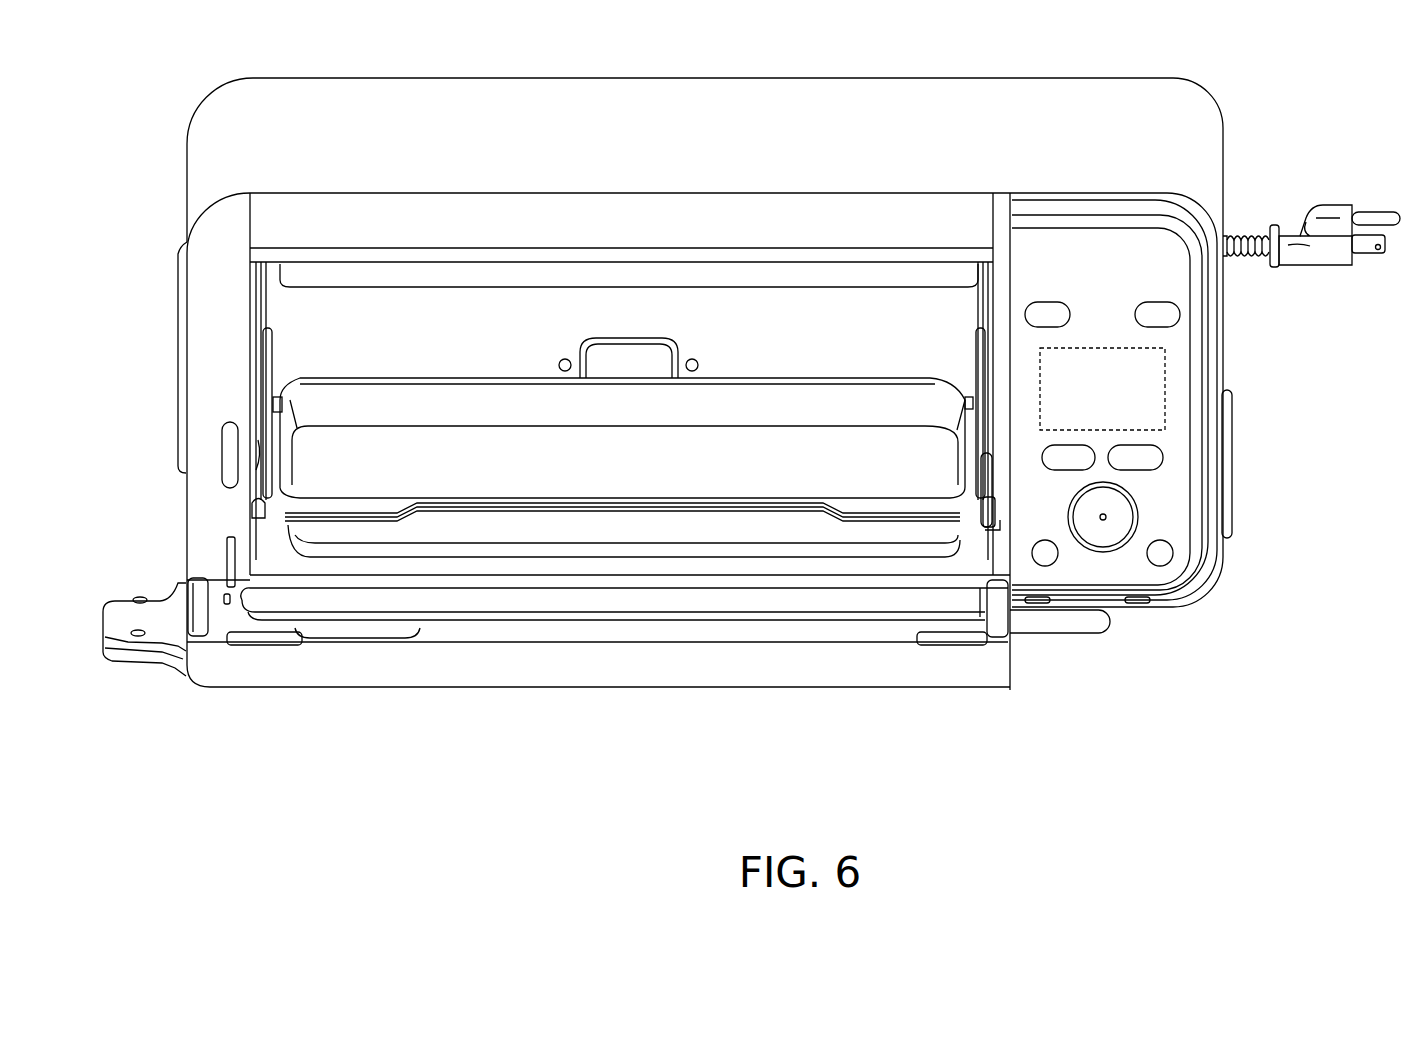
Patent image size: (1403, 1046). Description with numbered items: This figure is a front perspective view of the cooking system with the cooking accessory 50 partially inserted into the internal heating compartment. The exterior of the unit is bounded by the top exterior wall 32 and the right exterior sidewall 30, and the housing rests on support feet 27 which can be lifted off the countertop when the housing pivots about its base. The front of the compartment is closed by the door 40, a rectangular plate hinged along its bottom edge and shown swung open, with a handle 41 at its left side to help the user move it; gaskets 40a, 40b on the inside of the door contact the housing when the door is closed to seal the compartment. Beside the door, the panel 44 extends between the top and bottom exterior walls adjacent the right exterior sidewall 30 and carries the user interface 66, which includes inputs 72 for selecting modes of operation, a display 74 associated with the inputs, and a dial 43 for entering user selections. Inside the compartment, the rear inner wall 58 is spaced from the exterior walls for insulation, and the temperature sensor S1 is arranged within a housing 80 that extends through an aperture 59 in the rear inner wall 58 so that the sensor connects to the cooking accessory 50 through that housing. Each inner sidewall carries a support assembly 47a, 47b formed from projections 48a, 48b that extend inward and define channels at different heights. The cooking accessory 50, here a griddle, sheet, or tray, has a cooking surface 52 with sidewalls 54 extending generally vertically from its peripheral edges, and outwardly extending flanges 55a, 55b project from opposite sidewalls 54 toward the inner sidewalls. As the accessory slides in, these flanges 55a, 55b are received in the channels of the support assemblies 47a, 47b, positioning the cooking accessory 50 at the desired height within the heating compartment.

The top exterior wall 32 is at (997, 105).
The right exterior sidewall 30 is at (1224, 313).
The panel 44 is at (1087, 242).
The user interface 66 is at (1122, 268).
The display 74 is at (1165, 356).
The inputs 72 is at (1135, 462).
The dial 43 is at (1105, 532).
The support feet 27 is at (1047, 620).
The door 40 is at (630, 628).
The gasket 40a is at (200, 610).
The gasket 40b is at (993, 650).
The handle 41 is at (137, 642).
The rear inner wall 58 is at (333, 280).
The support assembly 47a is at (253, 346).
The support assembly 47b is at (976, 310).
The projections 48a is at (258, 441).
The projections 48b is at (990, 437).
The outwardly extending flange 55a is at (250, 480).
The outwardly extending flange 55b is at (985, 492).
The sidewalls 54 is at (812, 405).
The cooking surface 52 is at (416, 470).
The cooking accessory 50 is at (666, 520).
The aperture 59 is at (580, 330).
The housing 80 is at (629, 335).
The temperature sensor S1 is at (630, 362).